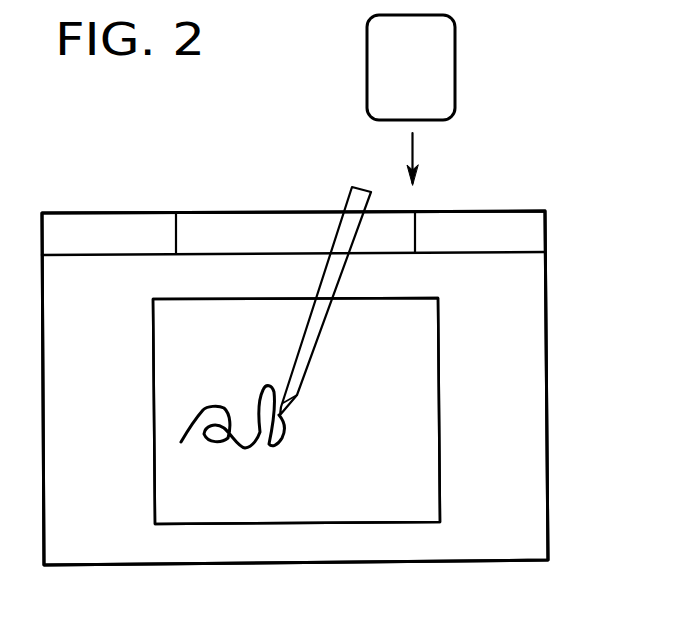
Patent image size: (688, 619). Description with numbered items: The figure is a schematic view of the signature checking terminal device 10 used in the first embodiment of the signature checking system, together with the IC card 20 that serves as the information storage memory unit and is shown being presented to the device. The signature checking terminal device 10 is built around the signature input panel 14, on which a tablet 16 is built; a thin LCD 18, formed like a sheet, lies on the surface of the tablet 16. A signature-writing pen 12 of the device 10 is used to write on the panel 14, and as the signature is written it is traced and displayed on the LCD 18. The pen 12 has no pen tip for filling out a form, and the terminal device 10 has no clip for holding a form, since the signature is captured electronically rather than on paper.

The signature checking terminal device 10 is at (499, 210).
The signature-writing pen 12 is at (350, 195).
The signature input panel 14 is at (533, 448).
The tablet 16 is at (440, 325).
The LCD 18 is at (424, 400).
The IC card 20 is at (454, 70).